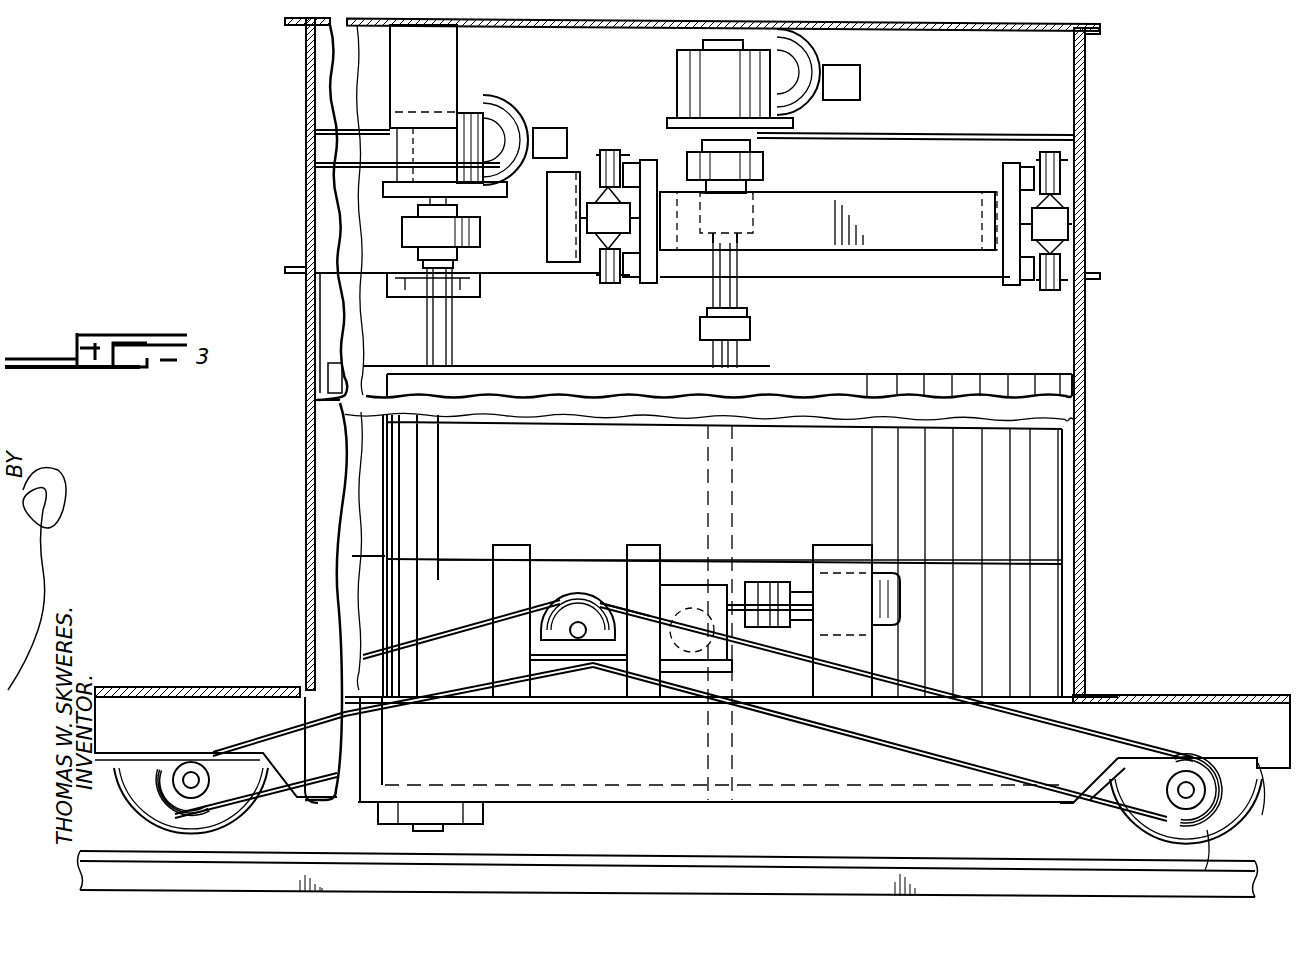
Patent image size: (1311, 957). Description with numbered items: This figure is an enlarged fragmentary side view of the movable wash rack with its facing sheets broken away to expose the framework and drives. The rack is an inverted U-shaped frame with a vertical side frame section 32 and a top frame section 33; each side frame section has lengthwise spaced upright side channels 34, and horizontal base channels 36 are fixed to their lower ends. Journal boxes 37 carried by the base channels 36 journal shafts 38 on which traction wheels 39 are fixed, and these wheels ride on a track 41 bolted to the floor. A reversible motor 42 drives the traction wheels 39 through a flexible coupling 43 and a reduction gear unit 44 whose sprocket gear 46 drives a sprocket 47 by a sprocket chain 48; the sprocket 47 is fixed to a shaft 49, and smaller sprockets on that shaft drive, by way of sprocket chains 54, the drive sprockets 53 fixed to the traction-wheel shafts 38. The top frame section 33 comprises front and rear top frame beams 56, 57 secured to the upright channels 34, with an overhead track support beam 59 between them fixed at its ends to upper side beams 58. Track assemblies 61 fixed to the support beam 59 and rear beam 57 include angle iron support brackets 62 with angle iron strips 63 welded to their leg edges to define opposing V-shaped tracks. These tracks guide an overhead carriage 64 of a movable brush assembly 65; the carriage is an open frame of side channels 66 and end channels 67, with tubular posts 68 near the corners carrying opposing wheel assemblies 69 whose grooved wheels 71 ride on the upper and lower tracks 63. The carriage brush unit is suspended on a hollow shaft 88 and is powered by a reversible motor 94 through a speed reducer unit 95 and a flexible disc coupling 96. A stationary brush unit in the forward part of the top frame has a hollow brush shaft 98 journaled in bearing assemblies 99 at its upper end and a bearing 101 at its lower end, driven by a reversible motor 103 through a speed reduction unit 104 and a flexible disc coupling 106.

The side frame section 32 is at (1090, 465).
The top frame section 33 is at (1088, 58).
The upright side channel 34 is at (308, 648).
The base channel 36 is at (1135, 710).
The journal box 37 is at (233, 812).
The shaft 38 is at (185, 788).
The traction wheel 39 is at (125, 827).
The track 41 is at (800, 866).
The motor 42 is at (902, 606).
The flexible coupling 43 is at (770, 627).
The reduction gear unit 44 is at (703, 584).
The sprocket gear 46 is at (728, 680).
The sprocket 47 is at (578, 590).
The sprocket chain 48 is at (657, 604).
The shaft 49 is at (578, 640).
The drive sprocket 53 is at (1206, 862).
The sprocket chain 54 is at (439, 636).
The front top frame beam 56 is at (1084, 124).
The rear top frame beam 57 is at (304, 60).
The upper side beam 58 is at (328, 206).
The overhead track support beam 59 is at (560, 262).
The track assembly 61 is at (645, 239).
The angle iron support bracket 62 is at (638, 270).
The angle iron strip 63 is at (610, 187).
The carriage 64 is at (792, 181).
The brush assembly 65 is at (889, 178).
The side channel 66 is at (665, 183).
The end channel 67 is at (877, 252).
The tubular post 68 is at (647, 160).
The wheel assembly 69 is at (615, 140).
The grooved wheel 71 is at (602, 148).
The hollow shaft 88 is at (752, 231).
The reversible motor 94 is at (823, 54).
The speed reducer unit 95 is at (790, 108).
The flexible disc coupling 96 is at (763, 162).
The hollow brush shaft 98 is at (453, 344).
The bearing assembly 99 is at (425, 298).
The bearing 101 is at (483, 818).
The reversible motor 103 is at (495, 100).
The speed reduction unit 104 is at (412, 144).
The flexible disc coupling 106 is at (480, 228).